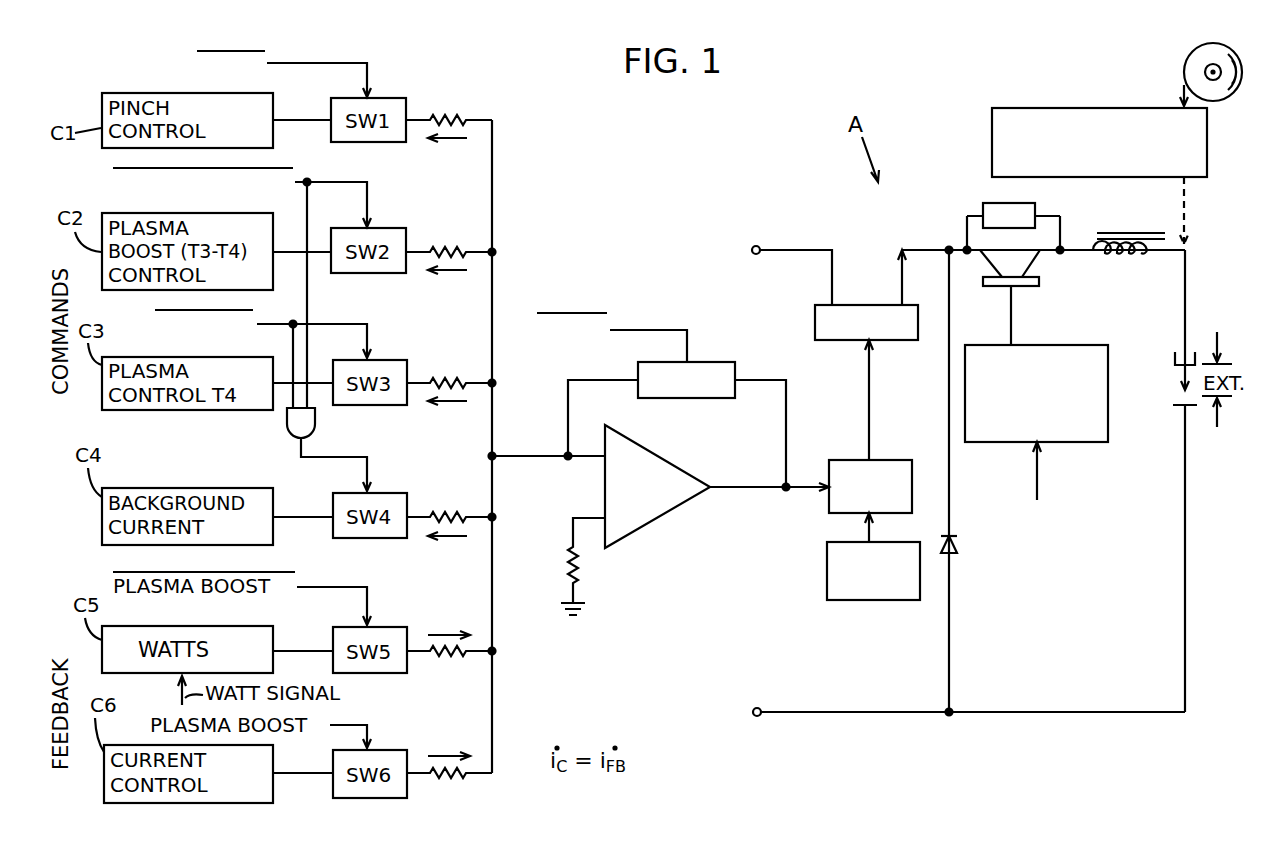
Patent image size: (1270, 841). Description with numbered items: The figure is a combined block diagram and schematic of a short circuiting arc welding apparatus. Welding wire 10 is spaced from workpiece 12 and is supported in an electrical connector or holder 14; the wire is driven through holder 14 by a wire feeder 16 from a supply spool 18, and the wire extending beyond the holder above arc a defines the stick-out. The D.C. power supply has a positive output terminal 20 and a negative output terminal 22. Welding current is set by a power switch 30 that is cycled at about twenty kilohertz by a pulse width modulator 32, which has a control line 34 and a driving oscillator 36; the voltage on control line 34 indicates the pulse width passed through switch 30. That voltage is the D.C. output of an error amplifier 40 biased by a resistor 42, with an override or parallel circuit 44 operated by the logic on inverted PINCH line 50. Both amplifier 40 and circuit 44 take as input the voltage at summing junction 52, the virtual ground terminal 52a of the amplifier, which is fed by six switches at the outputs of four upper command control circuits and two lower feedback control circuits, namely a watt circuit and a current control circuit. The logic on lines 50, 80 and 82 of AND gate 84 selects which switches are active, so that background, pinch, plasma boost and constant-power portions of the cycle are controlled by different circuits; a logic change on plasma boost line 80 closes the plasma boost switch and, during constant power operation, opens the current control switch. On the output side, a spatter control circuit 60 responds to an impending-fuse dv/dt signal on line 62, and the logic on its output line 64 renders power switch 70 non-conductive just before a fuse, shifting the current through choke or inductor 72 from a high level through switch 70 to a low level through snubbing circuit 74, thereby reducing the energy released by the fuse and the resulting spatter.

The welding wire 10 is at (1180, 378).
The workpiece 12 is at (1190, 408).
The electrical connector or holder 14 is at (1172, 360).
The wire feeder 16 is at (1046, 108).
The supply spool 18 is at (1186, 60).
The positive output terminal 20 is at (782, 251).
The negative output terminal 22 is at (765, 710).
The power switch 30 is at (845, 340).
The pulse width modulator 32 is at (827, 507).
The control line 34 is at (803, 492).
The driving oscillator 36 is at (827, 588).
The error amplifier 40 is at (662, 455).
The resistor 42 is at (580, 568).
The override or parallel circuit 44 is at (708, 398).
The inverted PINCH line 50 is at (355, 63).
The summing junction 52 is at (495, 455).
The virtual ground terminal 52a is at (585, 600).
The spatter control circuit 60 is at (1062, 345).
The fuse signal line 62 is at (1040, 475).
The output line 64 is at (1011, 306).
The power switch 70 is at (1040, 282).
The choke or inductor 72 is at (1128, 258).
The snubbing circuit 74 is at (1010, 210).
The plasma boost line 80 is at (332, 182).
The plasma line 82 is at (293, 338).
The AND gate 84 is at (288, 432).
The arc a is at (1180, 400).